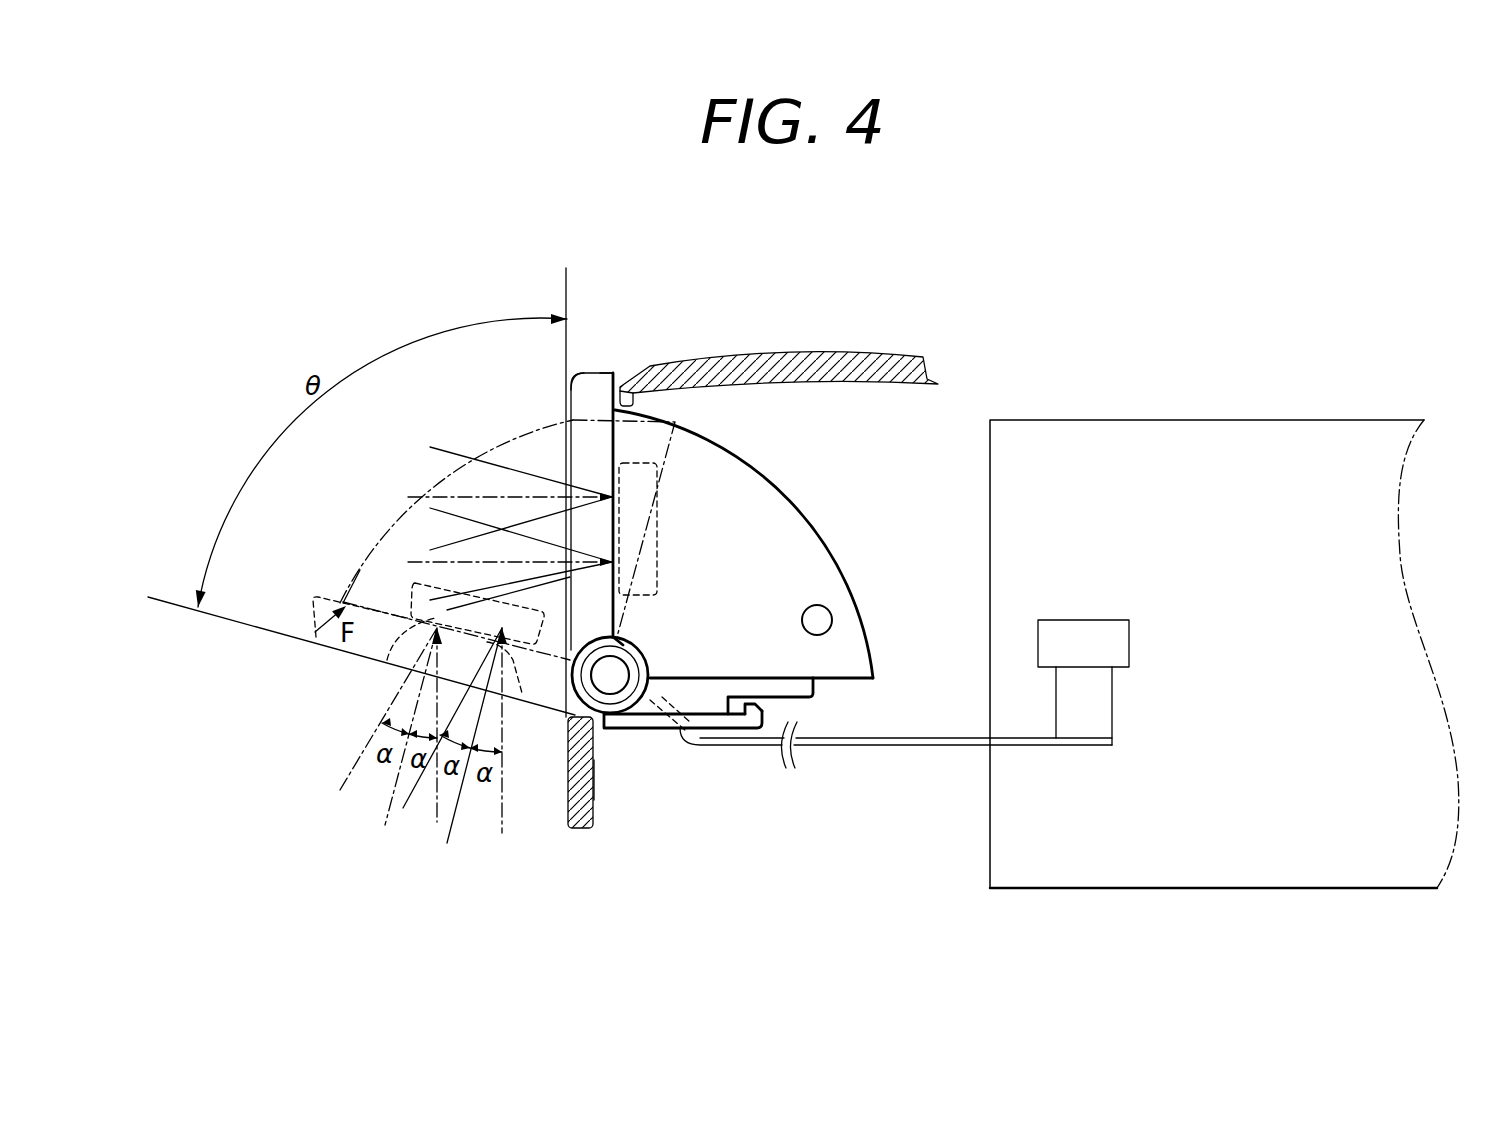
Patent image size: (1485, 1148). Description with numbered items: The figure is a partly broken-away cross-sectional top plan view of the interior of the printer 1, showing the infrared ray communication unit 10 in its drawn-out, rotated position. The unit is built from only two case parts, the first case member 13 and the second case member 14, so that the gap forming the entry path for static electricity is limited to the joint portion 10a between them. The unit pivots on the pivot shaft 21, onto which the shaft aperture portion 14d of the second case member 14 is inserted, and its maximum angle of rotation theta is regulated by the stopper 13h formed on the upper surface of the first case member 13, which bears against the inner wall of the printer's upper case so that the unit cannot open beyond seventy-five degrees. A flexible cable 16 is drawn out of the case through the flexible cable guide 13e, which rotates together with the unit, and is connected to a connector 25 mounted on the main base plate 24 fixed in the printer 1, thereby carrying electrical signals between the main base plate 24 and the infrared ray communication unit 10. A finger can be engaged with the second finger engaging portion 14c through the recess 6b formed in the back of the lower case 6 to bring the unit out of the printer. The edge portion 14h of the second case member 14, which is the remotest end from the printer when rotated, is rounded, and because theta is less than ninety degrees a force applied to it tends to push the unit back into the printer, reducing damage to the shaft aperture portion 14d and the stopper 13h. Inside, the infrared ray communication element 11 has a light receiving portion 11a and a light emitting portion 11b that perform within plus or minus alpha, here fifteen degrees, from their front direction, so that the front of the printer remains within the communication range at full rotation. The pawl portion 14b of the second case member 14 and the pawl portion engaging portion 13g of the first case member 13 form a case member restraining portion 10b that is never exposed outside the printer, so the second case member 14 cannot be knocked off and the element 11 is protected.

The printer 1 is at (1252, 348).
The lower case 6 is at (914, 357).
The recess 6b is at (628, 398).
The infrared ray communication unit 10 is at (811, 487).
The joint portion 10a is at (610, 435).
The case member restraining portion 10b is at (732, 794).
The infrared ray communication element 11 is at (425, 597).
The light receiving portion 11a is at (387, 660).
The light emitting portion 11b is at (522, 693).
The first case member 13 is at (818, 545).
The flexible cable guide 13e is at (653, 682).
The pawl portion engaging portion 13g is at (750, 712).
The stopper 13h is at (835, 618).
The second case member 14 is at (570, 405).
The pawl portion 14b is at (735, 728).
The second finger engaging portion 14c is at (620, 378).
The shaft aperture portion 14d is at (603, 806).
The edge portion 14h is at (568, 376).
The flexible cable 16 is at (1028, 748).
The pivot shaft 21 is at (612, 687).
The main base plate 24 is at (1328, 445).
The connector 25 is at (1115, 662).